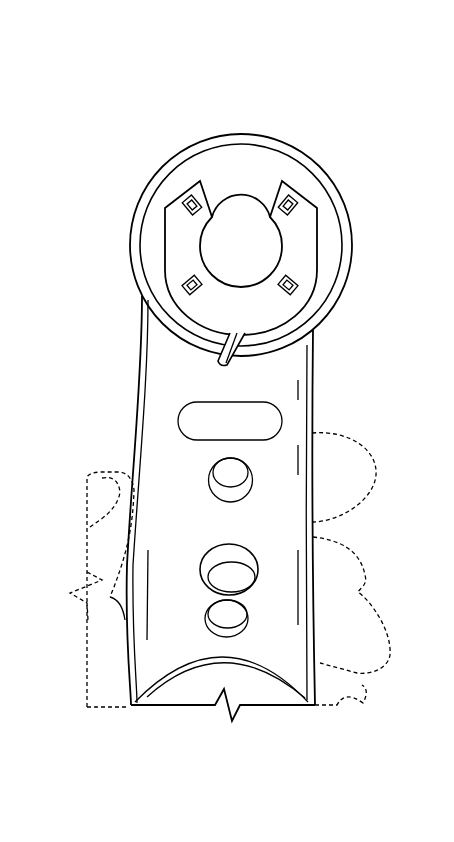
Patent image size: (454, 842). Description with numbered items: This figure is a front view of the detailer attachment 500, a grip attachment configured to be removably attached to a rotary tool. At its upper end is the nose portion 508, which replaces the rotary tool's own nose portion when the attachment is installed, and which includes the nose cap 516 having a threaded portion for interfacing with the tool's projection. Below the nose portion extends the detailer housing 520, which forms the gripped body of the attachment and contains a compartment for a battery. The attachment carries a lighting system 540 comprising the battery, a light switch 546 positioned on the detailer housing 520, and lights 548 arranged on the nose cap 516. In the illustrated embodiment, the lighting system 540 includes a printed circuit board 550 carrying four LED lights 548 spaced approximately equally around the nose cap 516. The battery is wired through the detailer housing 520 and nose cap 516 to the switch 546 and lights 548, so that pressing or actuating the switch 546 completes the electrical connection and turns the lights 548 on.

The detailer attachment 500 is at (374, 118).
The nose portion 508 is at (163, 142).
The nose cap 516 is at (250, 152).
The detailer housing 520 is at (297, 477).
The lighting system 540 is at (360, 350).
The light switch 546 is at (210, 563).
The lights 548 is at (186, 204).
The printed circuit board 550 is at (182, 300).